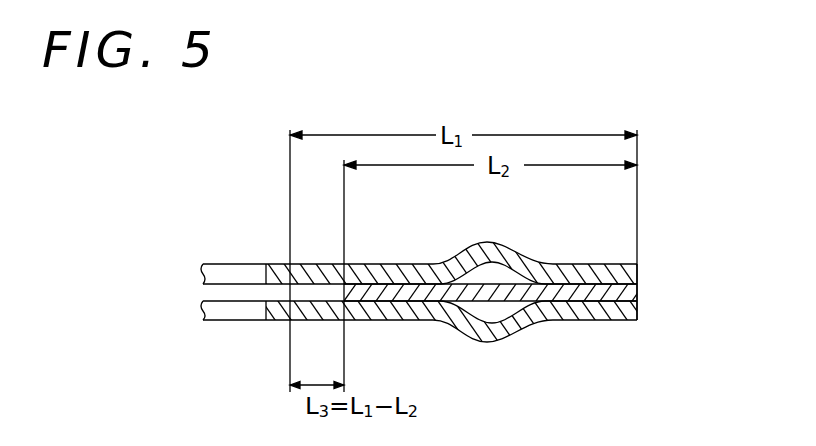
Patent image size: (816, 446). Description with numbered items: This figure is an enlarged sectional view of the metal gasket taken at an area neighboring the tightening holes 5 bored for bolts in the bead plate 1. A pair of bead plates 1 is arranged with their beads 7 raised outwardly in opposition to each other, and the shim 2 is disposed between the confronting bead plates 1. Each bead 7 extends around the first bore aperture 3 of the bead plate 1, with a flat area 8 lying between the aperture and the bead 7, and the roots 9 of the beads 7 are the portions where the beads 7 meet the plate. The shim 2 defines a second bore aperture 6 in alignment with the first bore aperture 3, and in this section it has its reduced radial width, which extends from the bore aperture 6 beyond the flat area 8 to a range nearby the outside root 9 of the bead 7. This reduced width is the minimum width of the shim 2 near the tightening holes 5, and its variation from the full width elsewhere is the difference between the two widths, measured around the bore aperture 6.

The bead plate 1 is at (389, 274).
The shim 2 is at (583, 296).
The first bore aperture 3 is at (637, 275).
The tightening hole 5 is at (265, 263).
The second bore aperture 6 is at (637, 293).
The bead 7 is at (506, 247).
The flat area 8 is at (601, 276).
The root of the bead 9 is at (447, 276).